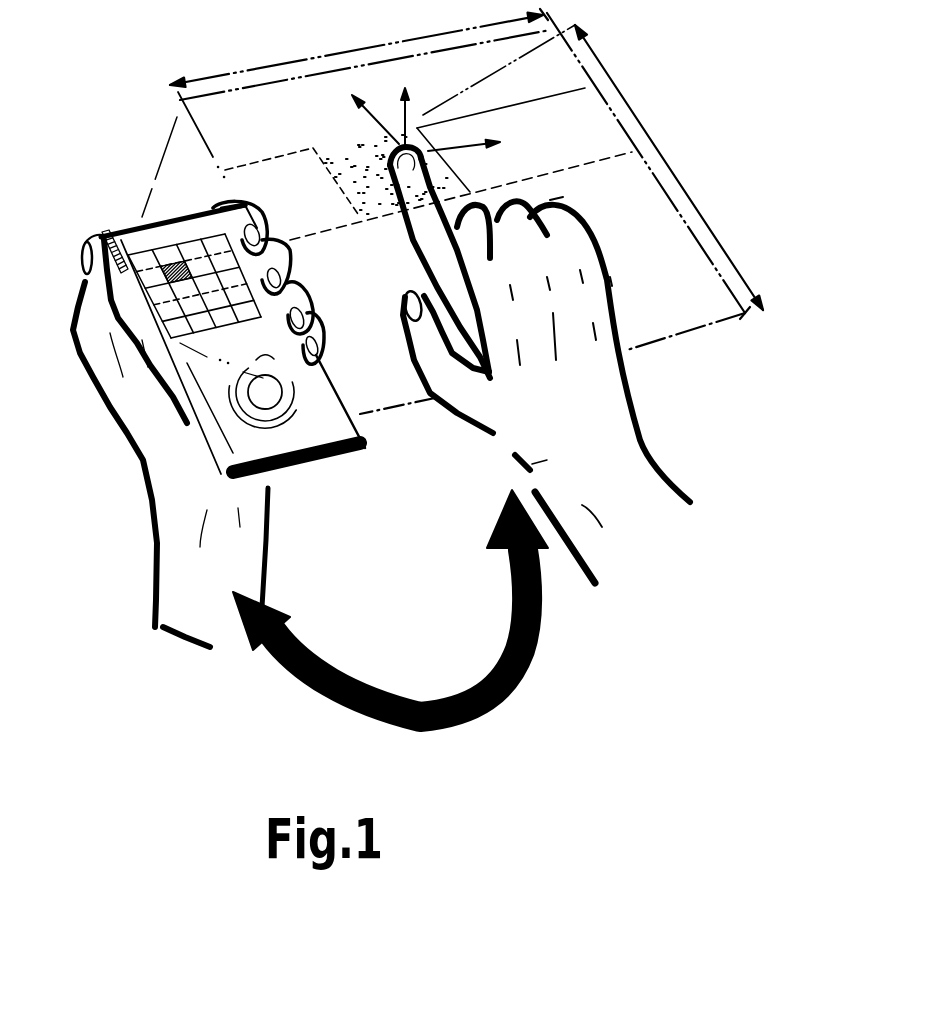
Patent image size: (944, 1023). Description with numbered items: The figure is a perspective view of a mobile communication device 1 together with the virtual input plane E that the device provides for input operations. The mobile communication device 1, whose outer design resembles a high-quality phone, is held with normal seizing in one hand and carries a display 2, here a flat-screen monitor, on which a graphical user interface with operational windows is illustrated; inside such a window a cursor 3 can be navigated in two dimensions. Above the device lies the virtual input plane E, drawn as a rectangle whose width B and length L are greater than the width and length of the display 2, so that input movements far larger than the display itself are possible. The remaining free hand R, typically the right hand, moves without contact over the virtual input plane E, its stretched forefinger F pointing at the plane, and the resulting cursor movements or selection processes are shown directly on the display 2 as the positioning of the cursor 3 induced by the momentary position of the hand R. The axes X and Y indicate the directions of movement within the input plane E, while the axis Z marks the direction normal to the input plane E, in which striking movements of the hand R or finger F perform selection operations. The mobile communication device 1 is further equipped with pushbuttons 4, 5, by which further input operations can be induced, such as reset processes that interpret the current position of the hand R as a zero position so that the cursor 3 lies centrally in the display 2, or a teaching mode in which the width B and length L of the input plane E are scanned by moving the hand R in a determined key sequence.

The mobile communication device 1 is at (197, 456).
The display 2 is at (147, 268).
The cursor 3 is at (176, 275).
The pushbutton 4 is at (240, 235).
The pushbutton 5 is at (100, 237).
The virtual input plane E is at (303, 93).
The width B is at (359, 48).
The length L is at (669, 167).
The forefinger F is at (380, 177).
The hand R is at (540, 365).
The X axis X is at (467, 158).
The Y axis Y is at (360, 119).
The Z axis Z is at (413, 113).